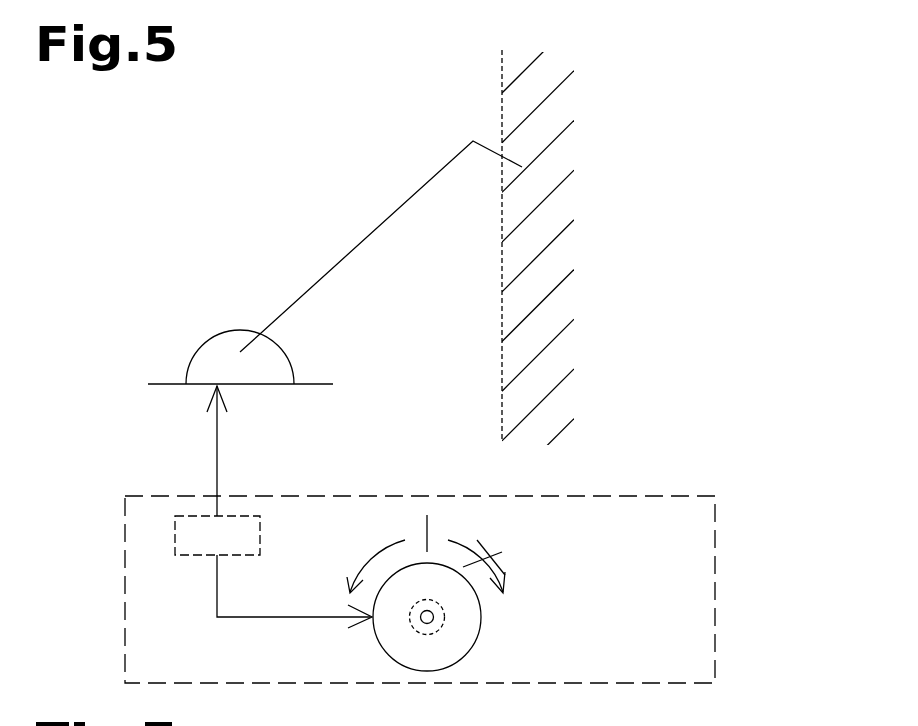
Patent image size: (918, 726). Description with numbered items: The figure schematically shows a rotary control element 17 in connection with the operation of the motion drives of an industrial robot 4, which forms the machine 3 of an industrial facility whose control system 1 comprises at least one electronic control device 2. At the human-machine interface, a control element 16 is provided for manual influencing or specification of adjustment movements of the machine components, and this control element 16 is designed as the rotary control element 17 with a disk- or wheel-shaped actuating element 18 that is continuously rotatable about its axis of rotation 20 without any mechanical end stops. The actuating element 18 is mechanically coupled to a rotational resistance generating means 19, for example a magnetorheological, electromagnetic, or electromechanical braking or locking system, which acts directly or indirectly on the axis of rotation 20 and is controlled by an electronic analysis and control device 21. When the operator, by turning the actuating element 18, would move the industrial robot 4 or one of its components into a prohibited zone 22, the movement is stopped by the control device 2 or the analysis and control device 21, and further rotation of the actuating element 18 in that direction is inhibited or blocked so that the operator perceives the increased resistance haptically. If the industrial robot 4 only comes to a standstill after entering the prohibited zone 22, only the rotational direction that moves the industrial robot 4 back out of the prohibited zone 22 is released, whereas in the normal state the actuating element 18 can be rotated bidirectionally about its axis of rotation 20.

The control system 1 is at (437, 432).
The electronic control device 2 is at (143, 530).
The machine 3 is at (333, 250).
The industrial robot 4 is at (215, 355).
The control element 16 is at (488, 525).
The rotary control element 17 is at (447, 662).
The actuating element 18 is at (462, 606).
The rotational resistance generating means 19 is at (422, 632).
The axis of rotation 20 is at (443, 618).
The analysis and control device 21 is at (245, 523).
The prohibited zone 22 is at (503, 113).